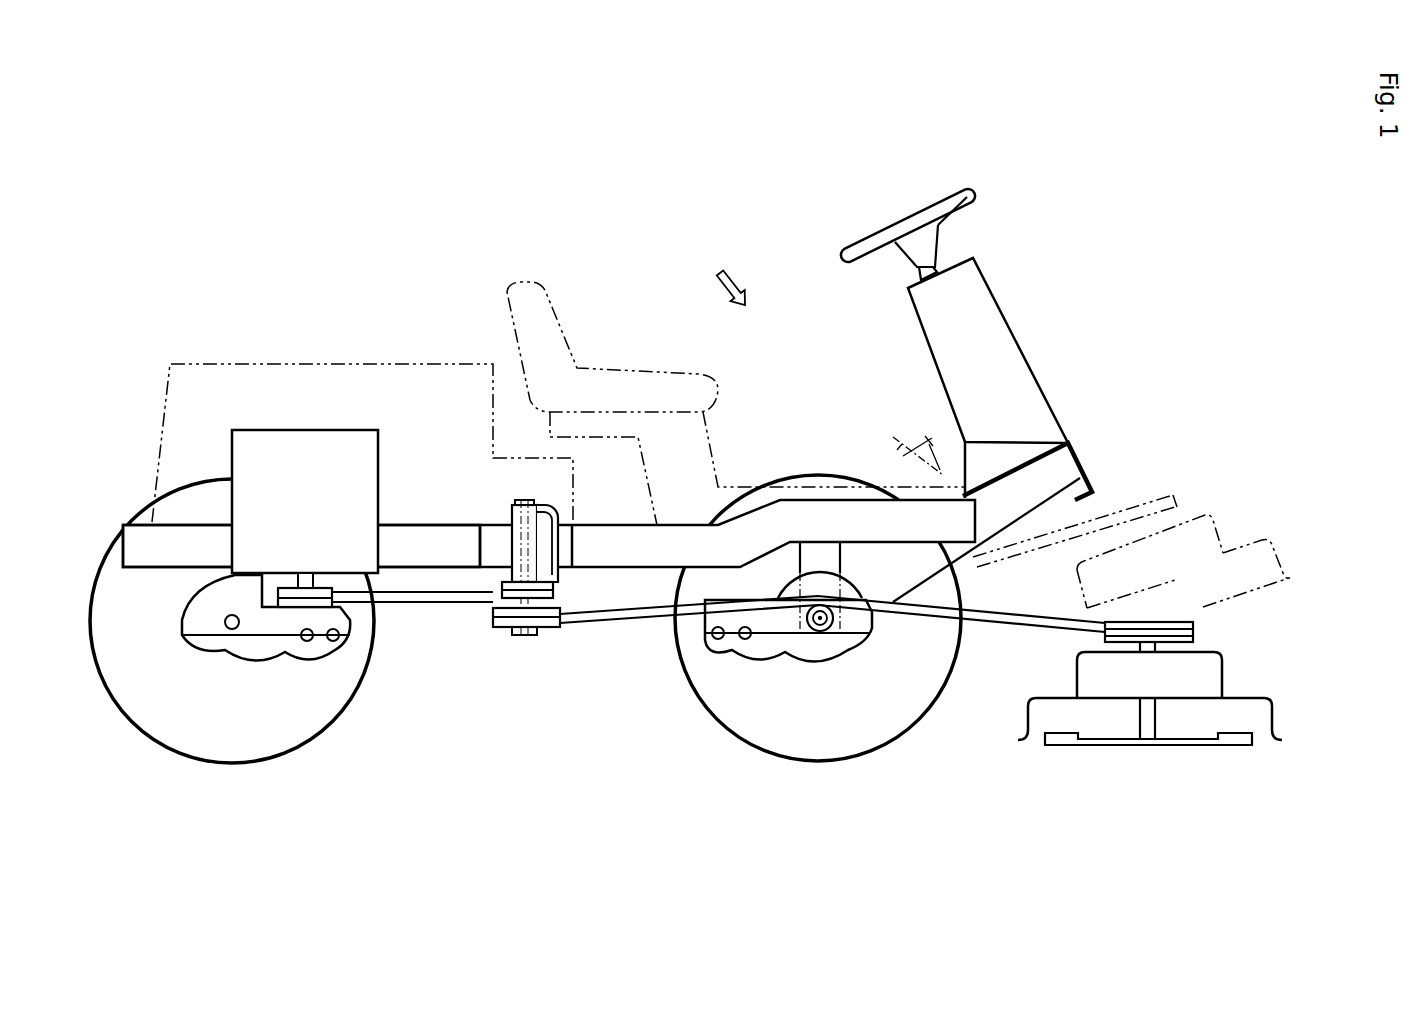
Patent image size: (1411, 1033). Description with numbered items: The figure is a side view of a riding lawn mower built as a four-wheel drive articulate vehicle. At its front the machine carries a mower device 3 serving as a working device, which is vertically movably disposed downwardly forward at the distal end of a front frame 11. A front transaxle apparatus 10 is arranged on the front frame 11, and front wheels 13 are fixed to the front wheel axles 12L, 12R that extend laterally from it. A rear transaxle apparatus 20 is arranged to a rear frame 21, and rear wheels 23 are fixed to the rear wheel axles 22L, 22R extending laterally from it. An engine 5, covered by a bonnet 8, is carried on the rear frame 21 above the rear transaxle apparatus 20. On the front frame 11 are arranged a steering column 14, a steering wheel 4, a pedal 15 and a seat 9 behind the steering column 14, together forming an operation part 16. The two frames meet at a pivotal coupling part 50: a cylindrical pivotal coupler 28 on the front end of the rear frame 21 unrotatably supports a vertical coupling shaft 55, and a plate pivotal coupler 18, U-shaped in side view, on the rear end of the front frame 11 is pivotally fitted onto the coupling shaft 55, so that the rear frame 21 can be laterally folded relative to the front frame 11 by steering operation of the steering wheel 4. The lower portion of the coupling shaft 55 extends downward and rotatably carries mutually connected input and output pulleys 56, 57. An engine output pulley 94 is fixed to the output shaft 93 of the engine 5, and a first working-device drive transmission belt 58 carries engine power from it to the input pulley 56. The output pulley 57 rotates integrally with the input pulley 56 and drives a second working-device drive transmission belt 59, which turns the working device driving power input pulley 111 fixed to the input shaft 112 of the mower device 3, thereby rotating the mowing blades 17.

The mower device 3 is at (1132, 641).
The steering wheel 4 is at (858, 242).
The engine 5 is at (365, 430).
The bonnet 8 is at (409, 364).
The seat 9 is at (553, 297).
The front transaxle apparatus 10 is at (818, 635).
The front frame 11 is at (660, 525).
The front wheel axle 12R is at (822, 630).
The front wheel axle 12L is at (854, 713).
The front wheel 13 is at (700, 712).
The steering column 14 is at (1024, 356).
The pedal 15 is at (906, 440).
The operation part 16 is at (724, 277).
The mowing blades 17 is at (1055, 745).
The plate pivotal coupler 18 is at (560, 582).
The rear transaxle apparatus 20 is at (249, 634).
The rear frame 21 is at (428, 525).
The rear wheel axle 22R is at (240, 628).
The rear wheel axle 22L is at (268, 713).
The rear wheel 23 is at (347, 707).
The cylindrical pivotal coupler 28 is at (512, 518).
The pivotal coupling part 50 is at (533, 561).
The coupling shaft 55 is at (538, 505).
The input pulley 56 is at (502, 590).
The output pulley 57 is at (493, 625).
The first working-device drive transmission belt 58 is at (408, 602).
The second working-device drive transmission belt 59 is at (630, 618).
The output shaft 93 is at (312, 576).
The engine output pulley 94 is at (300, 576).
The working device driving power input pulley 111 is at (1165, 622).
The input shaft 112 is at (1158, 652).